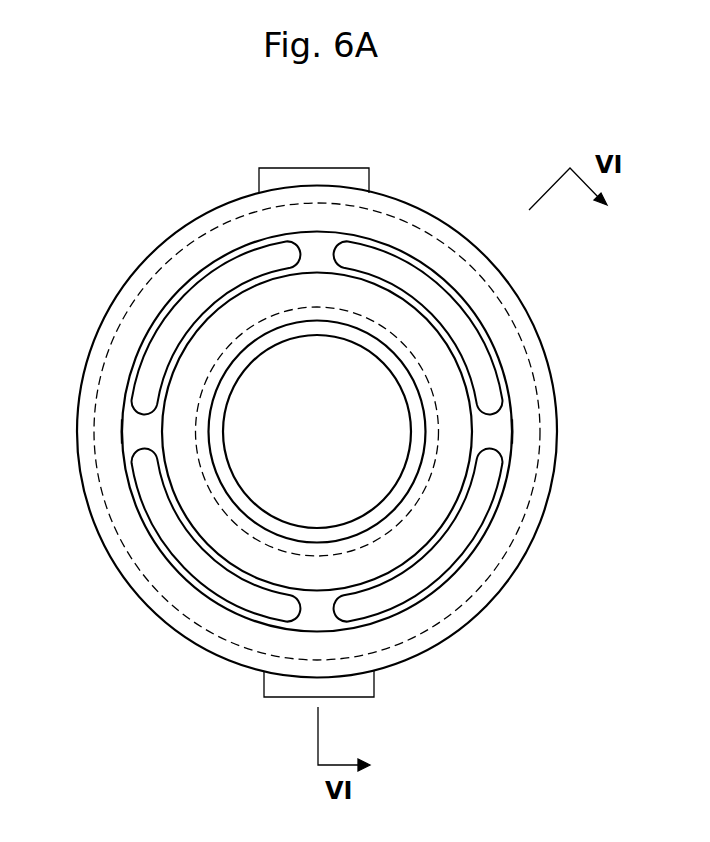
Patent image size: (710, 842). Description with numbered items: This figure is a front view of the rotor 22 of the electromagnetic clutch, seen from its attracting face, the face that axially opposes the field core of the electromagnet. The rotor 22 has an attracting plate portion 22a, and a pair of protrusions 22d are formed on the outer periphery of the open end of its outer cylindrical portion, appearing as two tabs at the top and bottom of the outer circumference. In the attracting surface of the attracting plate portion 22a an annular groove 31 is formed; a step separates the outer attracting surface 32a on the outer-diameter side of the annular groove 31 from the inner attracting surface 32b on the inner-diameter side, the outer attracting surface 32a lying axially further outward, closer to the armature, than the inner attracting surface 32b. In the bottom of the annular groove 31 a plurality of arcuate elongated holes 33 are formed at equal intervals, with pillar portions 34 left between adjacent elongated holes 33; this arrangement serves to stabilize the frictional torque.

The rotor 22 is at (213, 211).
The attracting plate portion 22a is at (413, 240).
The protrusions 22d is at (341, 172).
The annular groove 31 is at (202, 272).
The outer attracting surface 32a is at (500, 330).
The inner attracting surface 32b is at (450, 428).
The arcuate elongated holes 33 is at (166, 326).
The pillar portions 34 is at (143, 435).